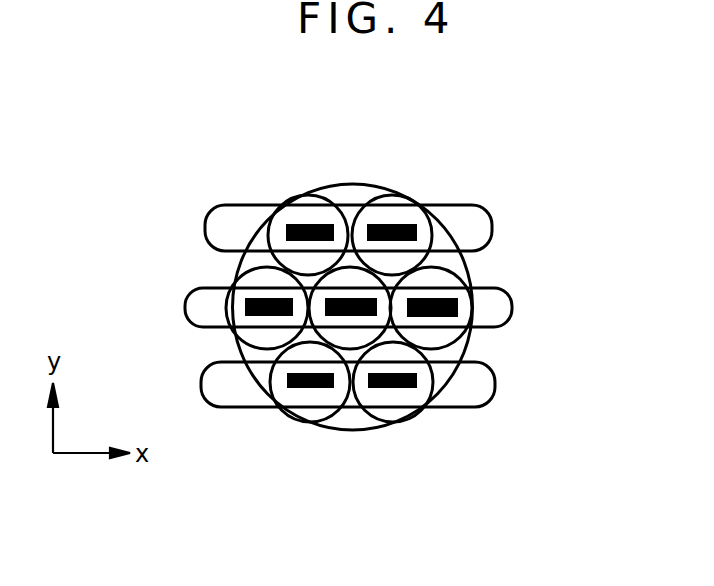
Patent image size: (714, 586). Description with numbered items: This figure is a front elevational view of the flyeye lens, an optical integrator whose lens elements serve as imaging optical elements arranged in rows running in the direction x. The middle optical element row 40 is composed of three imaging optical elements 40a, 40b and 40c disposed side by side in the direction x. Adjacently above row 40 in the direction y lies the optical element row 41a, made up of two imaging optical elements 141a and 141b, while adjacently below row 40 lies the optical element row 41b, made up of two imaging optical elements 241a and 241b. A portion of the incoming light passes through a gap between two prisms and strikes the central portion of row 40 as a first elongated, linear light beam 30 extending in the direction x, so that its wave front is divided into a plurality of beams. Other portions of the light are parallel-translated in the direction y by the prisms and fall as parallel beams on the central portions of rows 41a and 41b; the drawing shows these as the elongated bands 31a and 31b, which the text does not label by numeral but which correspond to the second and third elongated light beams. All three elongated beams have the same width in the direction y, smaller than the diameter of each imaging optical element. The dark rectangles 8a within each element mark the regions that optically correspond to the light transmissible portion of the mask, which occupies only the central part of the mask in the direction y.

The first elongated light beam 30 is at (202, 298).
The upper holding bar 31a is at (220, 227).
The lower holding bar 31b is at (215, 368).
The optical element row 40 is at (443, 307).
The imaging optical element 40a is at (312, 273).
The imaging optical element 40b is at (388, 278).
The imaging optical element 40c is at (440, 284).
The optical element row 41a is at (369, 179).
The optical element row 41b is at (394, 445).
The imaging optical element 141a is at (322, 194).
The imaging optical element 141b is at (385, 194).
The imaging optical element 241a is at (332, 412).
The imaging optical element 241b is at (423, 418).
The regions optically corresponding to the light transmissible portion 8a is at (260, 313).